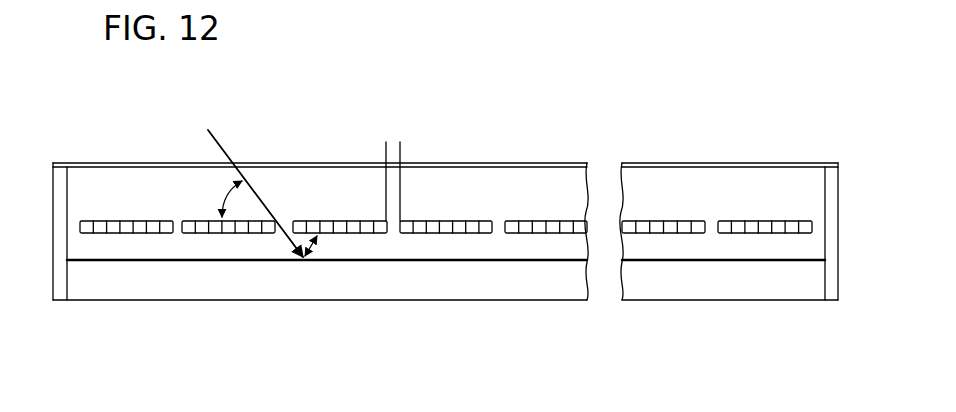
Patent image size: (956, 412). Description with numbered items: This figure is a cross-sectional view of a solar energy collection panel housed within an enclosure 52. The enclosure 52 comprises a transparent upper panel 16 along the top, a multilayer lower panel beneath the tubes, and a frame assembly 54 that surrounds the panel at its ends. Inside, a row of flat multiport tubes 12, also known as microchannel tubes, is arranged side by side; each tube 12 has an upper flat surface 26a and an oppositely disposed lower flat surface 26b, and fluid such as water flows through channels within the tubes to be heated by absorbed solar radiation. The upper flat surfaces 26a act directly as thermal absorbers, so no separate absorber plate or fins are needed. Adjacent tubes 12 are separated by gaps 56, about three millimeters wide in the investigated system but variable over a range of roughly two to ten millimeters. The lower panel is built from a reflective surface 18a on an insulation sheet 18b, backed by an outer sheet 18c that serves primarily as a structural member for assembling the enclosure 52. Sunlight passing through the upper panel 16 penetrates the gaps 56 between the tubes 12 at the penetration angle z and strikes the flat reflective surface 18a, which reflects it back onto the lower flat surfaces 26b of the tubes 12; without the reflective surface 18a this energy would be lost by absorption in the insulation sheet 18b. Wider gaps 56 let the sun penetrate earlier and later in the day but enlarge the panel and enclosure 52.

The enclosure 52 is at (445, 188).
The frame assembly 54 is at (63, 193).
The gap 56 is at (391, 167).
The transparent upper panel 16 is at (476, 163).
The tube 12 is at (446, 262).
The upper flat surface 26a is at (446, 262).
The lower flat surface 26b is at (352, 233).
The reflective surface 18a is at (163, 262).
The insulation sheet 18b is at (250, 287).
The outer sheet 18c is at (73, 303).